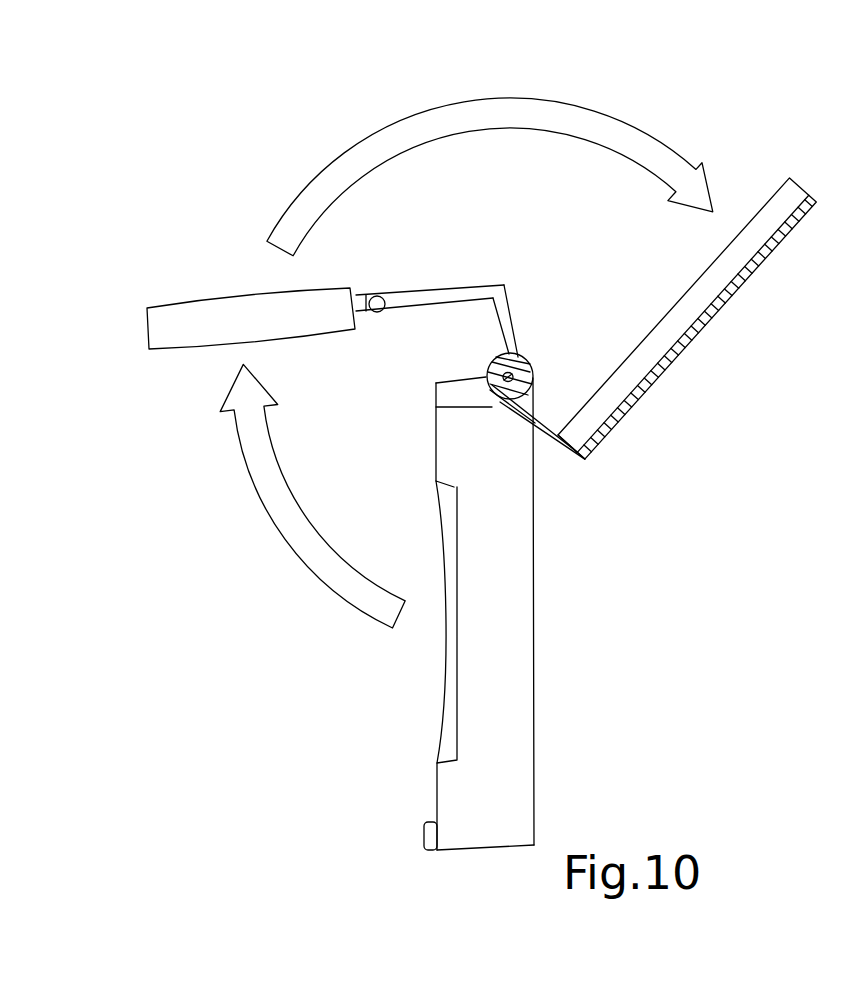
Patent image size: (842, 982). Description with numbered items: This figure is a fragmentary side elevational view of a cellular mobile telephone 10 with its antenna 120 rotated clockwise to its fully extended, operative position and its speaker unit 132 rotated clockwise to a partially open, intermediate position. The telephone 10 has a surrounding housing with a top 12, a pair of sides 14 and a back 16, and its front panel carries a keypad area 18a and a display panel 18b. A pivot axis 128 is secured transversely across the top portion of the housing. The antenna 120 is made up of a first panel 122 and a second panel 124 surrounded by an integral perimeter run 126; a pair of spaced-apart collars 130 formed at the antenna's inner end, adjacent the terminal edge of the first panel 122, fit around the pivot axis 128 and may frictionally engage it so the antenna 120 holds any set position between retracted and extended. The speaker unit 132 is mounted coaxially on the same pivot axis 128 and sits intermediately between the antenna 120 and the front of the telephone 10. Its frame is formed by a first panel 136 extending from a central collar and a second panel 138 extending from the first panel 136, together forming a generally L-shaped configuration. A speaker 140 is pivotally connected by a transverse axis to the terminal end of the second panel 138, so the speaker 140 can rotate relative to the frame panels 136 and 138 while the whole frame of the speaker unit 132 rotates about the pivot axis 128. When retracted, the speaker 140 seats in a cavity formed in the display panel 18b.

The mobile telephone 10 is at (578, 712).
The top 12 is at (468, 379).
The sides 14 is at (474, 616).
The back 16 is at (538, 785).
The keypad area 18a is at (437, 786).
The display panel 18b is at (441, 526).
The antenna 120 is at (708, 398).
The first panel 122 is at (551, 442).
The second panel 124 is at (742, 300).
The perimeter run 126 is at (735, 240).
The pivot axis 128 is at (514, 376).
The collars 130 is at (518, 357).
The speaker unit 132 is at (331, 364).
The first panel 136 is at (504, 302).
The second panel 138 is at (424, 292).
The speaker 140 is at (193, 315).